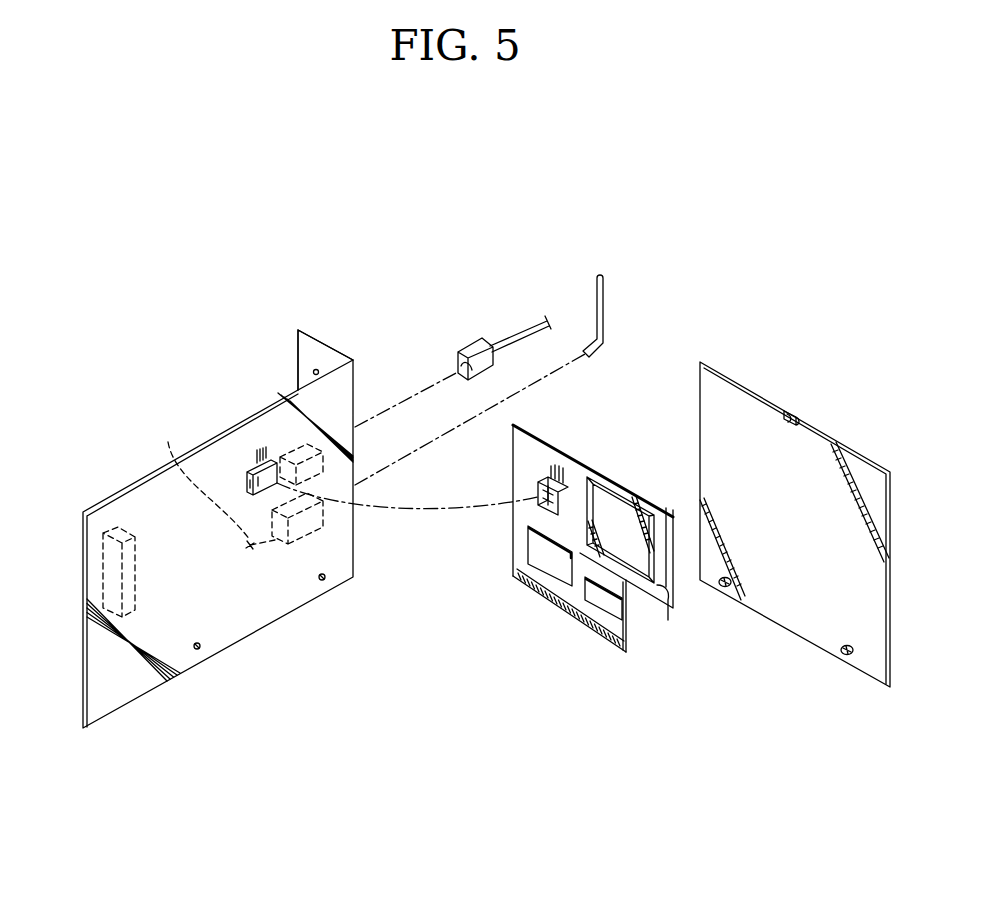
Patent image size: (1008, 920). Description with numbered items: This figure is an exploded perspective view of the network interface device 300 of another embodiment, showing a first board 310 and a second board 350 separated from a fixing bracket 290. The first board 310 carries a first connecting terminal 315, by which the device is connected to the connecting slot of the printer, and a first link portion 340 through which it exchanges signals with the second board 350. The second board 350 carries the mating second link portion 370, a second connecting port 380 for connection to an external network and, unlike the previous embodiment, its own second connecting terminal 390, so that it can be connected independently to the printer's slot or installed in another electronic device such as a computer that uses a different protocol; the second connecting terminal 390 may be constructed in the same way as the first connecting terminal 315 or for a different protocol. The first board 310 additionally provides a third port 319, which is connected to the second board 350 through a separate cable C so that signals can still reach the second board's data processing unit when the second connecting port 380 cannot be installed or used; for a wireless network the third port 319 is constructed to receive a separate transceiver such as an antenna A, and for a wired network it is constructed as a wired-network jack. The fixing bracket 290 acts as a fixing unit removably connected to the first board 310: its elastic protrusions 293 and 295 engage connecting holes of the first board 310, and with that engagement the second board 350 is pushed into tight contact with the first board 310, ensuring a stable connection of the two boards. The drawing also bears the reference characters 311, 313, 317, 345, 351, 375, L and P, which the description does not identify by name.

The network interface device 300 is at (142, 293).
The first board 310 is at (232, 547).
The board body 311 is at (218, 547).
The screw holes 313 is at (296, 650).
The first connecting terminal 315 is at (87, 517).
The bent flange 317 is at (297, 352).
The third port 319 is at (405, 494).
The first link portion 340 is at (224, 413).
The connector pins 345 is at (219, 413).
The second board 350 is at (542, 533).
The board window 351 is at (517, 573).
The second link portion 370 is at (563, 428).
The connector pins 375 is at (543, 412).
The second connecting port 380 is at (629, 519).
The second connecting terminal 390 is at (569, 647).
The fixing bracket 290 is at (785, 529).
The elastic protrusion 293 is at (766, 652).
The elastic protrusion 295 is at (793, 379).
The lamp cable connector L is at (504, 318).
The antenna A is at (631, 316).
The cable C is at (214, 484).
The pad P is at (504, 598).